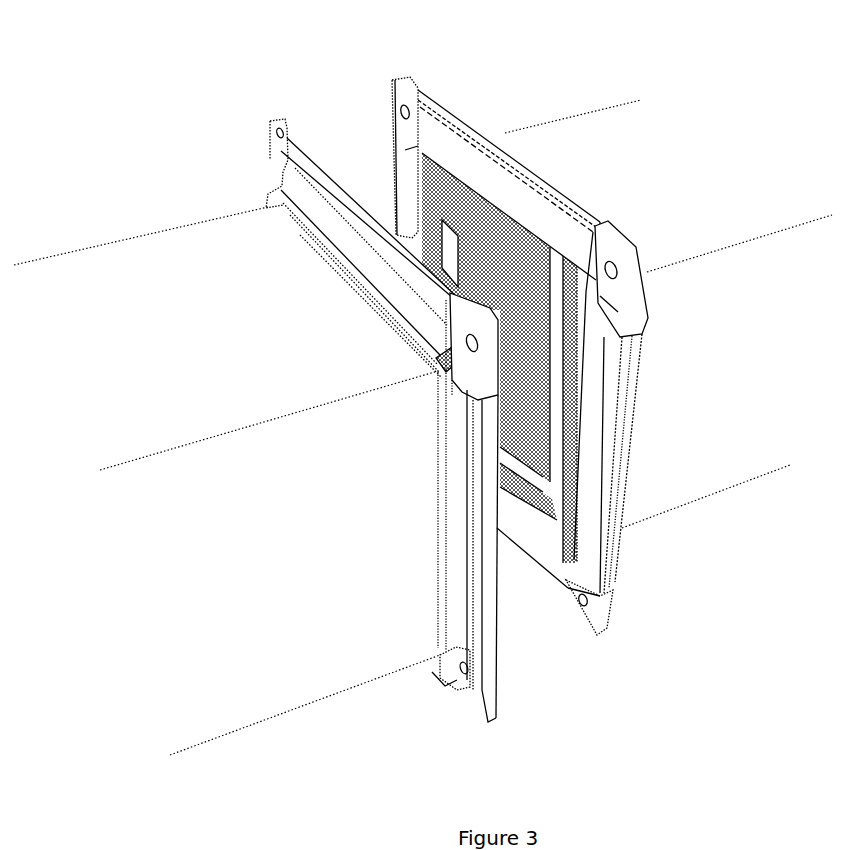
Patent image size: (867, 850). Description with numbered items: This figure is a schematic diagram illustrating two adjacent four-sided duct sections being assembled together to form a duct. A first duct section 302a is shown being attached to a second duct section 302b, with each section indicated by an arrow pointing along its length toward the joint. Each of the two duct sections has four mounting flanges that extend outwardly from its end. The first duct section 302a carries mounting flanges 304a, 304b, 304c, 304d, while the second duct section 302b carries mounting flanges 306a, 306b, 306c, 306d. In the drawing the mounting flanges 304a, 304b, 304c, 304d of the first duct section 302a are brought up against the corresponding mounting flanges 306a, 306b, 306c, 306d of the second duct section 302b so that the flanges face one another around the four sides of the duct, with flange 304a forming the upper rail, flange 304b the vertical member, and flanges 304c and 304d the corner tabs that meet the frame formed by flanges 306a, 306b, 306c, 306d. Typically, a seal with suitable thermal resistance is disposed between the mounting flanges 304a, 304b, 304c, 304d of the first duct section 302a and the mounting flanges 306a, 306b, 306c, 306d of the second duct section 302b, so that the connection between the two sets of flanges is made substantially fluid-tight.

The first duct section 302a is at (214, 706).
The second duct section 302b is at (746, 487).
The mounting flange 304a is at (348, 218).
The mounting flange 304b is at (487, 554).
The mounting flange 304c is at (434, 665).
The mounting flange 304d is at (267, 187).
The mounting flange 306a is at (530, 207).
The mounting flange 306b is at (600, 512).
The mounting flange 306c is at (540, 566).
The mounting flange 306d is at (403, 188).